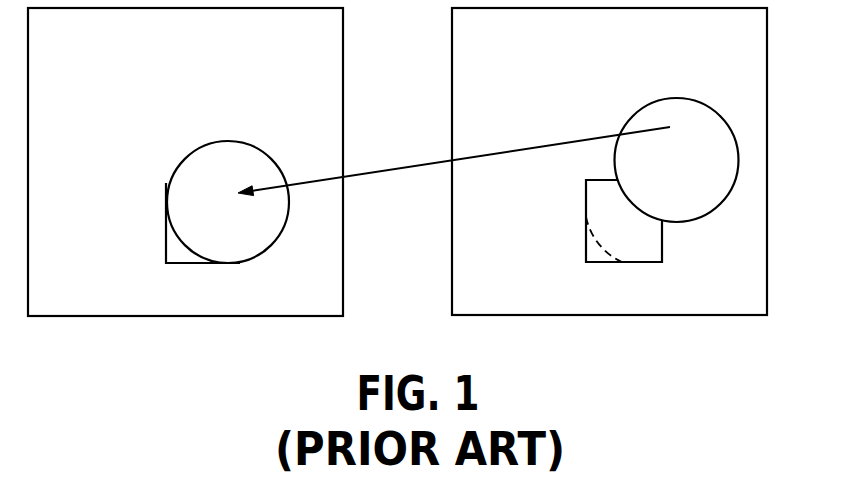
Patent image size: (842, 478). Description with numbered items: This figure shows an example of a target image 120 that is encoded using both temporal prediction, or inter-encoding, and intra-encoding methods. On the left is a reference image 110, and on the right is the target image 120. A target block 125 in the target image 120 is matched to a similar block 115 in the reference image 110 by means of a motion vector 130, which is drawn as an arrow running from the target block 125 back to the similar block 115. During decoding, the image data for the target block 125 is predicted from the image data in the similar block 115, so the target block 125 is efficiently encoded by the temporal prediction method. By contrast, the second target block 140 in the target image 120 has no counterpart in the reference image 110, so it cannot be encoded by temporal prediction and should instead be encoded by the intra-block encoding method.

The reference image 110 is at (127, 52).
The similar block 115 is at (225, 204).
The target image 120 is at (743, 52).
The target block 125 is at (695, 176).
The motion vector 130 is at (412, 162).
The target block 140 is at (640, 240).